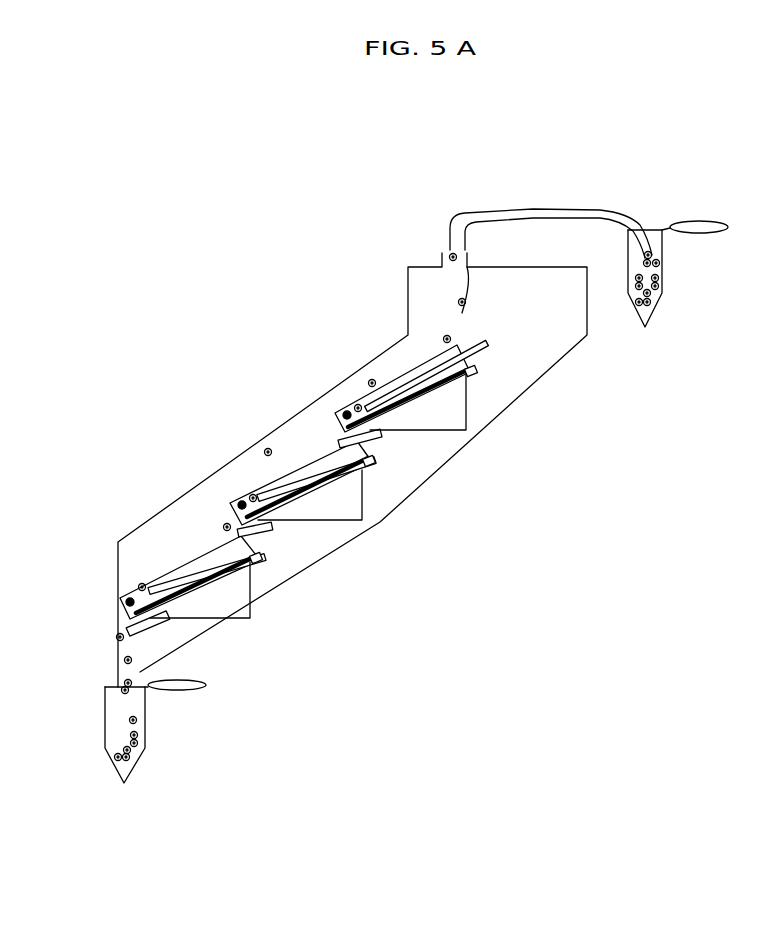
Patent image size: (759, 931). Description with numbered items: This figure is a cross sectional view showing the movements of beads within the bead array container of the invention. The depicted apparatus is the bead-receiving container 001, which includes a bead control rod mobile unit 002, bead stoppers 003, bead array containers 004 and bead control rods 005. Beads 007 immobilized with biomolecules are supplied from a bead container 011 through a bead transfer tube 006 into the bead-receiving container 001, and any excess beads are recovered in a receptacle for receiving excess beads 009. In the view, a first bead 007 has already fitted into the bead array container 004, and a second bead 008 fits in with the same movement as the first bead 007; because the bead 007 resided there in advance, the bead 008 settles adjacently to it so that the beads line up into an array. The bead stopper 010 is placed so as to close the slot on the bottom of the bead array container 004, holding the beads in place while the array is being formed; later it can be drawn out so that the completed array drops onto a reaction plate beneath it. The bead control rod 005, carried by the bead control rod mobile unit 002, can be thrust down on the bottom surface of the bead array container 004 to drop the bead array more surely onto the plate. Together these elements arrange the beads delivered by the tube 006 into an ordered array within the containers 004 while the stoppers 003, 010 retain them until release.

The bead-receiving container 001 is at (402, 507).
The bead control rod mobile unit 002 is at (450, 432).
The bead stoppers 003 is at (470, 373).
The bead array container 004 is at (477, 368).
The bead control rod 005 is at (480, 350).
The bead transfer tube 006 is at (553, 217).
The bead 007 is at (238, 498).
The second bead 008 is at (272, 438).
The receptacle for receiving excess beads 009 is at (142, 753).
The bead stopper 010 is at (443, 388).
The bead container 011 is at (660, 298).